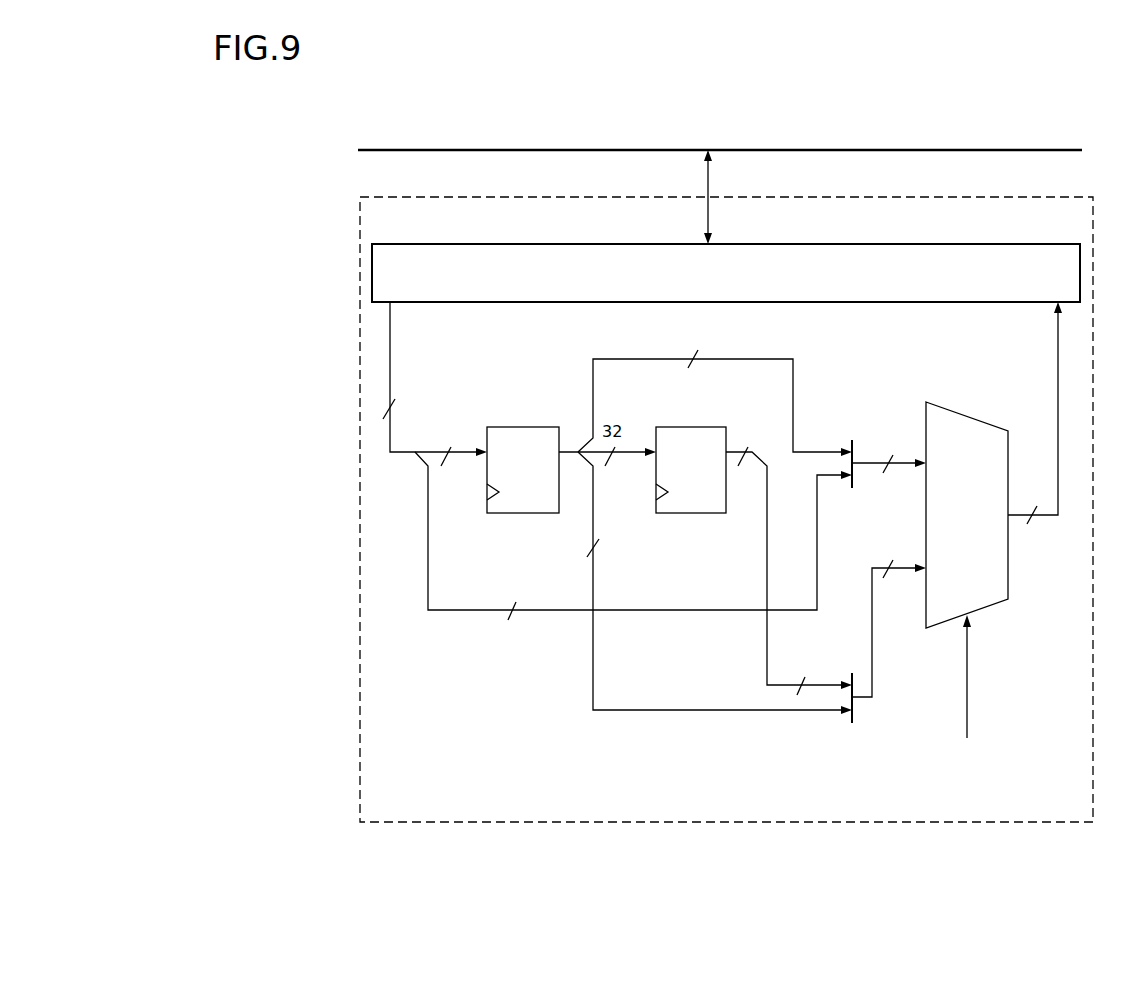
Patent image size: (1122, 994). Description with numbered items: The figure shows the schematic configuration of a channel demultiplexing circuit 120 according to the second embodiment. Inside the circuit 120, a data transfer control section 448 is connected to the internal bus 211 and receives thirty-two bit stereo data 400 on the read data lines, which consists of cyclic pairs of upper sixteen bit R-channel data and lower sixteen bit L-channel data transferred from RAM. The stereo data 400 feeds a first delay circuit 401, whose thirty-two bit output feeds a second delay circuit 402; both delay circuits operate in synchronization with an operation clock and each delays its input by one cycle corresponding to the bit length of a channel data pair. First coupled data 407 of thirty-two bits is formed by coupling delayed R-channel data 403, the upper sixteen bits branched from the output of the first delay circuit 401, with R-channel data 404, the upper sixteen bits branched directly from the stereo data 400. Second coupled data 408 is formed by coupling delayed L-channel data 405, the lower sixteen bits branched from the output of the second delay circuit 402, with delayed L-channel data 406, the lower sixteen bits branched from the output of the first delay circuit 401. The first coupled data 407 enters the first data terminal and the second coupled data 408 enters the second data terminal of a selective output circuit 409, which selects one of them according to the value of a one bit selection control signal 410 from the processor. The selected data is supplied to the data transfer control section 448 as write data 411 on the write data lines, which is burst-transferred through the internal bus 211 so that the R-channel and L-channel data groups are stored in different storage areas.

The internal bus 211 is at (1050, 150).
The channel demultiplexing circuit 120 is at (1024, 197).
The data transfer control section 448 is at (824, 244).
The stereo data 400 is at (390, 363).
The first delay circuit 401 is at (518, 427).
The second delay circuit 402 is at (688, 427).
The delayed R-channel data 403 is at (820, 452).
The R-channel data 404 is at (690, 610).
The delayed L-channel data 405 is at (767, 630).
The delayed L-channel data 406 is at (658, 710).
The first coupled data 407 is at (867, 468).
The second coupled data 408 is at (872, 648).
The selective output circuit 409 is at (974, 416).
The selection control signal 410 is at (967, 662).
The write data 411 is at (1052, 517).